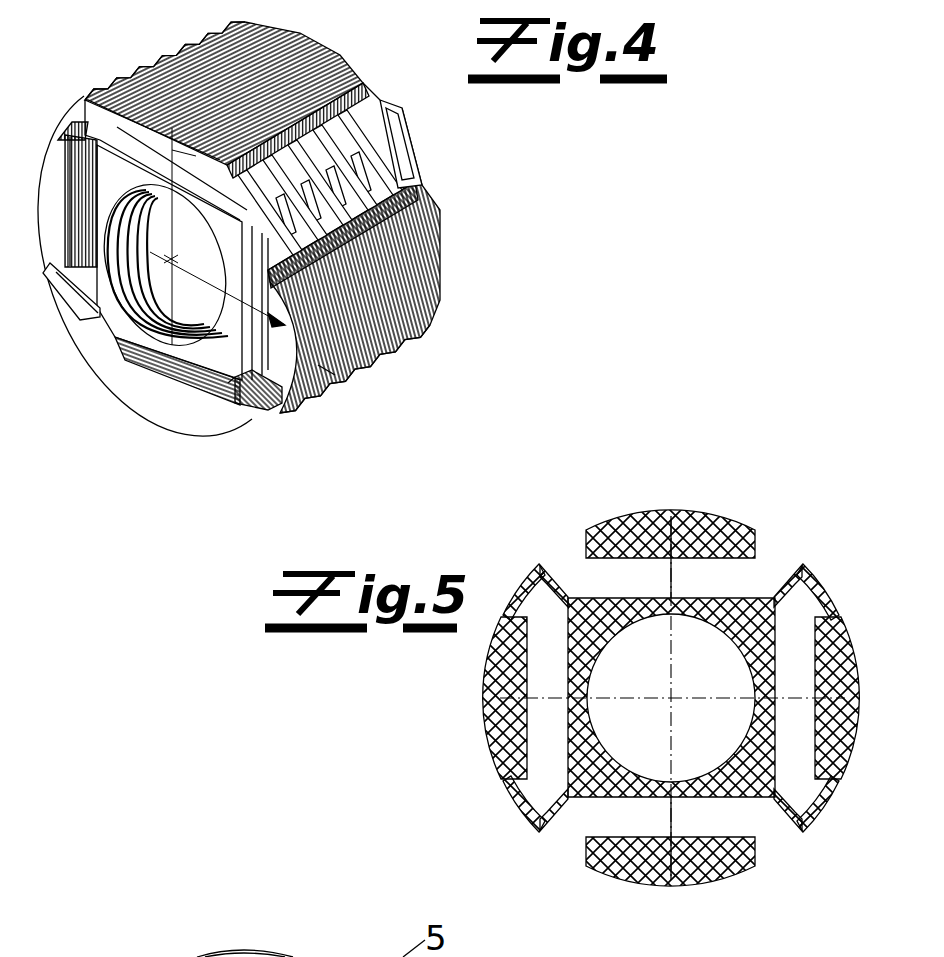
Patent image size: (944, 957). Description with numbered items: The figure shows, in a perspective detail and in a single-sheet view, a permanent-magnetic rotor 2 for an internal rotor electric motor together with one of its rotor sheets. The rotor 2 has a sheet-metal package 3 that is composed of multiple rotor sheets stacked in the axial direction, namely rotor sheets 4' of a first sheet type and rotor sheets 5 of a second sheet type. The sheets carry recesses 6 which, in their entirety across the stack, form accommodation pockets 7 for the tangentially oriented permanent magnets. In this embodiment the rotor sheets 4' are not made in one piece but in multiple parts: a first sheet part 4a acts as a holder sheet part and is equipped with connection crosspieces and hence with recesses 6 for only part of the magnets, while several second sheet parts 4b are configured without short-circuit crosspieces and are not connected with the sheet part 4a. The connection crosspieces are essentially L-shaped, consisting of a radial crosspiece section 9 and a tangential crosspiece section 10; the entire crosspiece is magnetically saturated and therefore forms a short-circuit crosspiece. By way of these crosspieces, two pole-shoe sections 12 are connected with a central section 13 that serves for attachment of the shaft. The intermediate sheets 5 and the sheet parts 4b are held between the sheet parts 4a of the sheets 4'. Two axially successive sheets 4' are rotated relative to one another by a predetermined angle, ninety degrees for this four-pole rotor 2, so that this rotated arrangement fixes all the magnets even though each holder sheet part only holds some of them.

In FIG. 4, the permanent-magnetic rotor 2 is at (492, 220).
In FIG. 4, the sheet-metal package 3 is at (363, 373).
In FIG. 4, the rotor sheet of the first sheet type 4' is at (369, 174).
In FIG. 5, the rotor sheet of the first sheet type 4' is at (803, 612).
In FIG. 4, the first sheet part 4a is at (52, 263).
In FIG. 5, the first sheet part 4a is at (490, 757).
In FIG. 4, the second sheet part 4b is at (142, 388).
In FIG. 5, the second sheet part 4b is at (703, 533).
In FIG. 4, the rotor sheet of the second sheet type 5 is at (430, 197).
In FIG. 5, the recess 6 is at (540, 663).
In FIG. 4, the accommodation pocket 7 is at (230, 382).
In FIG. 5, the radial crosspiece section 9 is at (553, 822).
In FIG. 5, the tangential crosspiece section 10 is at (515, 800).
In FIG. 5, the pole-shoe section 12 is at (487, 713).
In FIG. 5, the central section 13 is at (627, 790).